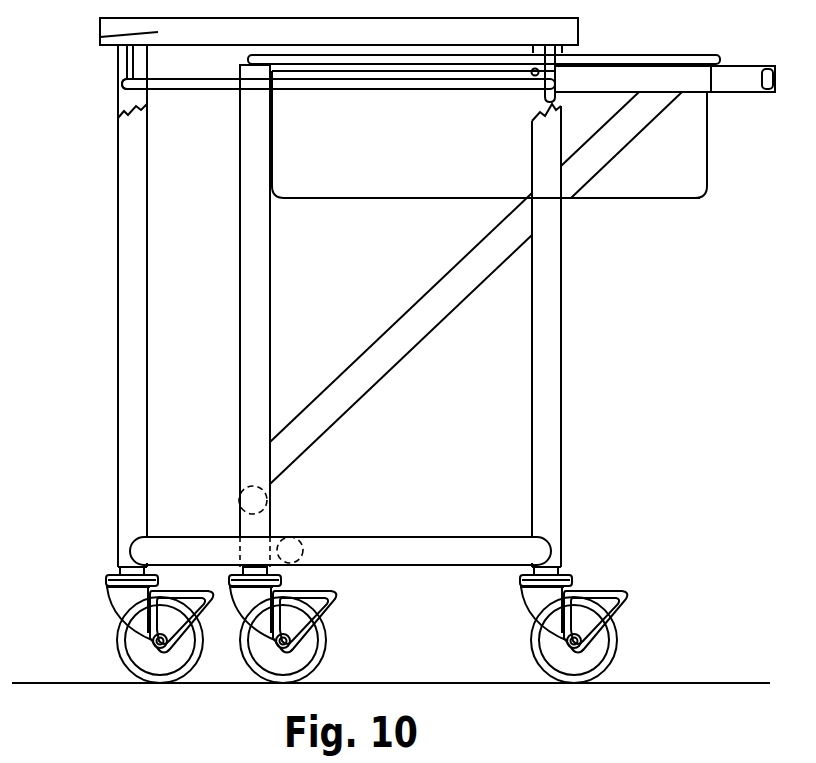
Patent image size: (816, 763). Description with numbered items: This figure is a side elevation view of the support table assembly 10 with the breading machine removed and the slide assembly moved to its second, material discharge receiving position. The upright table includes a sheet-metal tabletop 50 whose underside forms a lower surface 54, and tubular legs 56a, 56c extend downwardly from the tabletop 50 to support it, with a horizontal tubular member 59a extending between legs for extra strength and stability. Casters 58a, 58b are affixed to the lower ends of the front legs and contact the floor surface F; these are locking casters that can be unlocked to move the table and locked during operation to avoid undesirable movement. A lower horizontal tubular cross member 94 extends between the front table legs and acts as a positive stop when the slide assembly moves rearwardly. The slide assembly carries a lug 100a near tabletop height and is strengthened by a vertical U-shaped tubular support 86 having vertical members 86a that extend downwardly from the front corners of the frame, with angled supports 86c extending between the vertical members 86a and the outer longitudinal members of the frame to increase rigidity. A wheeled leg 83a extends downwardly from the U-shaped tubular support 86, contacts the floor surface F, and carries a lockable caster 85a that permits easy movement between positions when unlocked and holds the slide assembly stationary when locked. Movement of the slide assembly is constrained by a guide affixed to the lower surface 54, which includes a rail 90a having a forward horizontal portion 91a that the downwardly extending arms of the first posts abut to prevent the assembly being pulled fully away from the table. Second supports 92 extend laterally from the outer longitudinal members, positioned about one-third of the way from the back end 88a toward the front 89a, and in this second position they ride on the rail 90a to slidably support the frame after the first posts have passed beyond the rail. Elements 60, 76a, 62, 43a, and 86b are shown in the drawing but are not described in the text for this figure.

The top shelf 60 is at (100, 30).
The tabletop 50 is at (100, 40).
The lower surface 54 is at (189, 47).
The forward horizontal portion 91a is at (132, 88).
The rail 90a is at (167, 82).
The front 89a is at (240, 90).
The tray 76a is at (362, 32).
The second supports 92 is at (532, 77).
The shelf post 62 is at (578, 36).
The back end 88a is at (777, 92).
The diagonal brace portion 43a is at (552, 72).
The lug 100a is at (617, 203).
The support table assembly 10 is at (687, 225).
The leg 56a is at (135, 373).
The leg 56c is at (547, 385).
The vertical member 86a is at (252, 348).
The U-shaped tubular support 86 is at (240, 277).
The angled support 86c is at (364, 382).
The frame joint 86b is at (240, 498).
The wheeled leg 83a is at (272, 523).
The cross member 94 is at (299, 553).
The horizontal tubular member 59a is at (404, 547).
The caster 58a is at (133, 593).
The lockable caster 85a is at (248, 593).
The caster 58b is at (545, 593).
The floor surface F is at (697, 687).